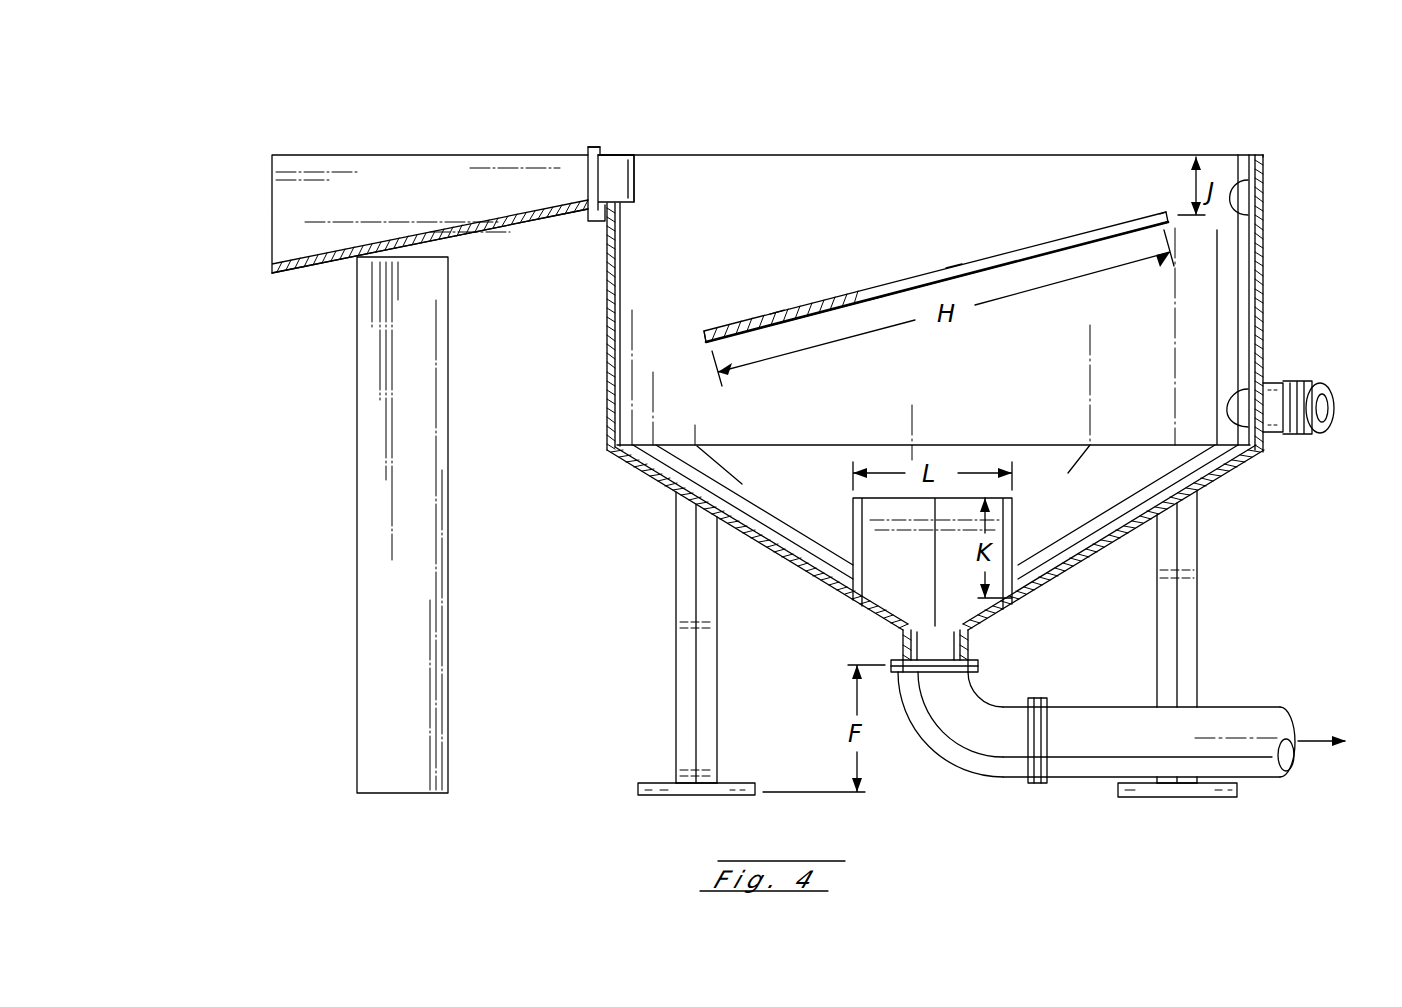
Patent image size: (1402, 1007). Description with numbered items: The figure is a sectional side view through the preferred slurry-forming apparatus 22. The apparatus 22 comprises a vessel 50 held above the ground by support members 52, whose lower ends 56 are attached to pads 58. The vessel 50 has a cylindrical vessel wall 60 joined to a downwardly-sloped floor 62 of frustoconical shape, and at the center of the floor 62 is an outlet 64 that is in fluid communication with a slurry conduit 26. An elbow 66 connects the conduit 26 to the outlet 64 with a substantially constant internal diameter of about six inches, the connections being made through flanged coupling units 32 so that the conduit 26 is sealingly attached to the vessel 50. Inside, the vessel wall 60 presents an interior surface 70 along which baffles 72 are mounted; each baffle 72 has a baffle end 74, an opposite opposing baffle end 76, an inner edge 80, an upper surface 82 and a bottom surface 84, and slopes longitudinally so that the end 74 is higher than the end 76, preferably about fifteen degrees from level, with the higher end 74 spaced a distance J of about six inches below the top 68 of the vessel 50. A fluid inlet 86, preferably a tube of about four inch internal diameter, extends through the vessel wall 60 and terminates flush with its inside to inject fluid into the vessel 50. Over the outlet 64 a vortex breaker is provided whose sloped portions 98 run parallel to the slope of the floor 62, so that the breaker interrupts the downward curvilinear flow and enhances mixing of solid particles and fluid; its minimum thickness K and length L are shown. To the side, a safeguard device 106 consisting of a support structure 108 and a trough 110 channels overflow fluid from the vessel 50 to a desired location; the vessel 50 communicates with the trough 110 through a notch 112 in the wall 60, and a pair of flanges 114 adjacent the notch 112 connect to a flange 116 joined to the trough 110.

The slurry-forming apparatus 22 is at (1250, 88).
The slurry conduit 26 is at (1227, 720).
The flanged coupling unit 32 is at (884, 652).
The vessel 50 is at (1265, 244).
The support member 52 is at (676, 673).
The lower end 56 is at (660, 765).
The pad 58 is at (725, 785).
The cylindrical vessel wall 60 is at (607, 330).
The downwardly-sloped floor 62 is at (1087, 568).
The outlet 64 is at (945, 655).
The elbow 66 is at (960, 725).
The top of vessel 68 is at (1182, 154).
The interior surface 70 is at (1240, 192).
The baffle 72 is at (1040, 242).
The baffle end 74 is at (1172, 213).
The opposite opposing baffle end 76 is at (703, 337).
The inner edge 80 is at (954, 267).
The upper surface 82 is at (777, 312).
The bottom surface 84 is at (877, 298).
The fluid inlet 86 is at (1298, 385).
The sloped portion 98 is at (870, 607).
The safeguard device 106 is at (315, 285).
The support structure 108 is at (357, 682).
The trough 110 is at (290, 238).
The notch 112 is at (597, 196).
The flange 114 is at (600, 152).
The flange 116 is at (585, 152).